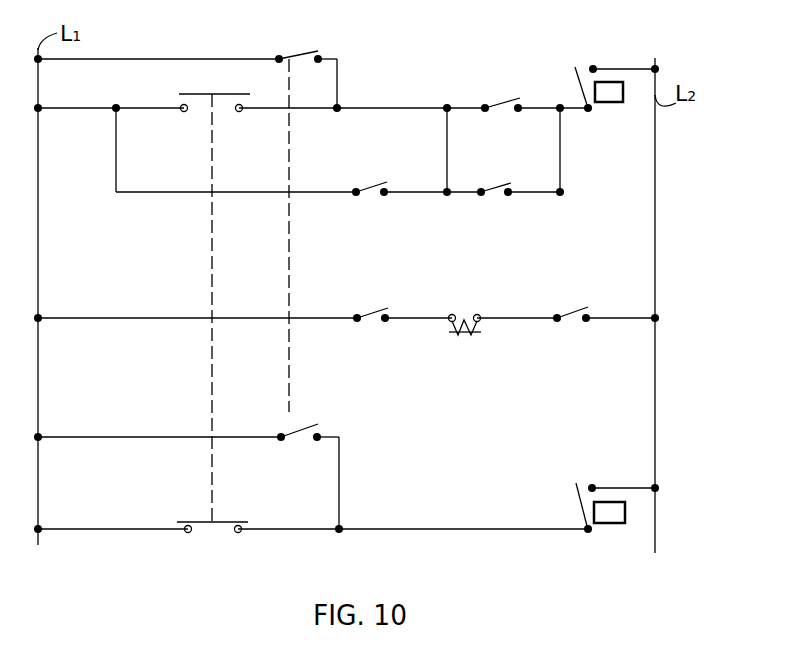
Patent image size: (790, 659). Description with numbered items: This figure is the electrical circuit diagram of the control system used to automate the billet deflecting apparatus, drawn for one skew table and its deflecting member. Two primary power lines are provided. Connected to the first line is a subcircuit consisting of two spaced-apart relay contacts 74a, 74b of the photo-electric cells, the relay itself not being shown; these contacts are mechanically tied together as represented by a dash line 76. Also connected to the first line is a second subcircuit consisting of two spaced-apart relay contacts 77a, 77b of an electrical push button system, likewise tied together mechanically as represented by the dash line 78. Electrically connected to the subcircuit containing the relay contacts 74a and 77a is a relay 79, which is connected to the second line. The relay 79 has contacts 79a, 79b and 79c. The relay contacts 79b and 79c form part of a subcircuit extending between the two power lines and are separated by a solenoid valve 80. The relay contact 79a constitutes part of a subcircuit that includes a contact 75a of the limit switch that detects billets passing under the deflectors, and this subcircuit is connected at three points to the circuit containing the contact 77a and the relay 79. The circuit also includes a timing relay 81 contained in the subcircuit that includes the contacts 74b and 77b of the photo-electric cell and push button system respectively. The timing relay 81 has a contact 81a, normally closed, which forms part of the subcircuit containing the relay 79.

The relay contact 74a is at (295, 56).
The relay contact 74b is at (296, 432).
The contact of the limit switch 75a is at (493, 192).
The dash line 76 is at (289, 262).
The relay contact 77a is at (184, 95).
The relay contact 77b is at (232, 522).
The dash line 78 is at (212, 262).
The relay 79 is at (592, 78).
The relay contact 79a is at (364, 185).
The relay contact 79b is at (366, 312).
The relay contact 79c is at (568, 310).
The solenoid valve 80 is at (466, 312).
The timing relay 81 is at (609, 525).
The contact of the timing relay 81a is at (503, 99).